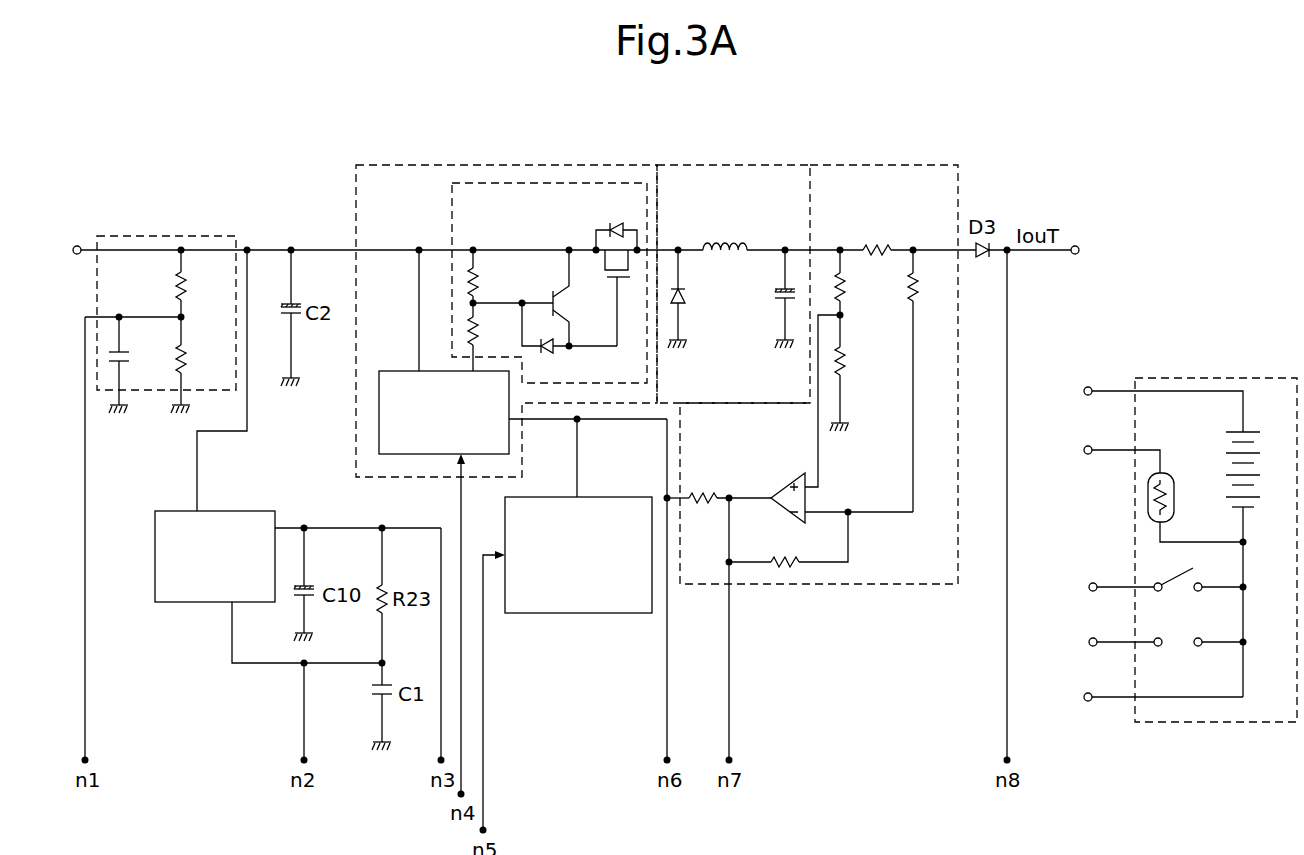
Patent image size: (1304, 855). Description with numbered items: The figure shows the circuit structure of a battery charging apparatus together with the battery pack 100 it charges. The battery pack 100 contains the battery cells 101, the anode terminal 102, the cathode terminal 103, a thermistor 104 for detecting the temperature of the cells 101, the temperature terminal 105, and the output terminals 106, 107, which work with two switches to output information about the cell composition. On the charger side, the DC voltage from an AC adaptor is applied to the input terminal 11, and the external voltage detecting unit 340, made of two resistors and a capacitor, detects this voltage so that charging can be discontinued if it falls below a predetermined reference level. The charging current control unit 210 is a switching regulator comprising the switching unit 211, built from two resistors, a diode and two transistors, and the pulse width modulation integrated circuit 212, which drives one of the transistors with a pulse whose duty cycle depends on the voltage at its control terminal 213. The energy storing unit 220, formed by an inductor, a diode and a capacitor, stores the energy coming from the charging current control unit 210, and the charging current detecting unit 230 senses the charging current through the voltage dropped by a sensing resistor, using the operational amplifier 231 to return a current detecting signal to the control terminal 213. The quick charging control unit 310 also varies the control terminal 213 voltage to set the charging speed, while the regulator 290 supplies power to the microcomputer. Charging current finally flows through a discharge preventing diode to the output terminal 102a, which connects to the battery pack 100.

The input terminal 11 is at (77, 246).
The external voltage detecting unit 340 is at (207, 226).
The charging current control unit 210 is at (506, 321).
The switching unit 211 is at (452, 212).
The pulse width modulation integrated circuit 212 is at (391, 371).
The control terminal 213 is at (548, 419).
The energy storing unit 220 is at (757, 165).
The charging current detecting unit 230 is at (811, 439).
The operational amplifier 231 is at (790, 483).
The regulator 290 is at (262, 511).
The quick charging control unit 310 is at (623, 497).
The output terminal 102a is at (1077, 246).
The battery pack 100 is at (1170, 527).
The battery cells 101 is at (1258, 432).
The anode terminal 102 is at (1090, 387).
The cathode terminal 103 is at (1091, 693).
The thermistor 104 is at (1172, 478).
The temperature terminal 105 is at (1090, 445).
The output terminal 106 is at (1095, 583).
The output terminal 107 is at (1095, 638).